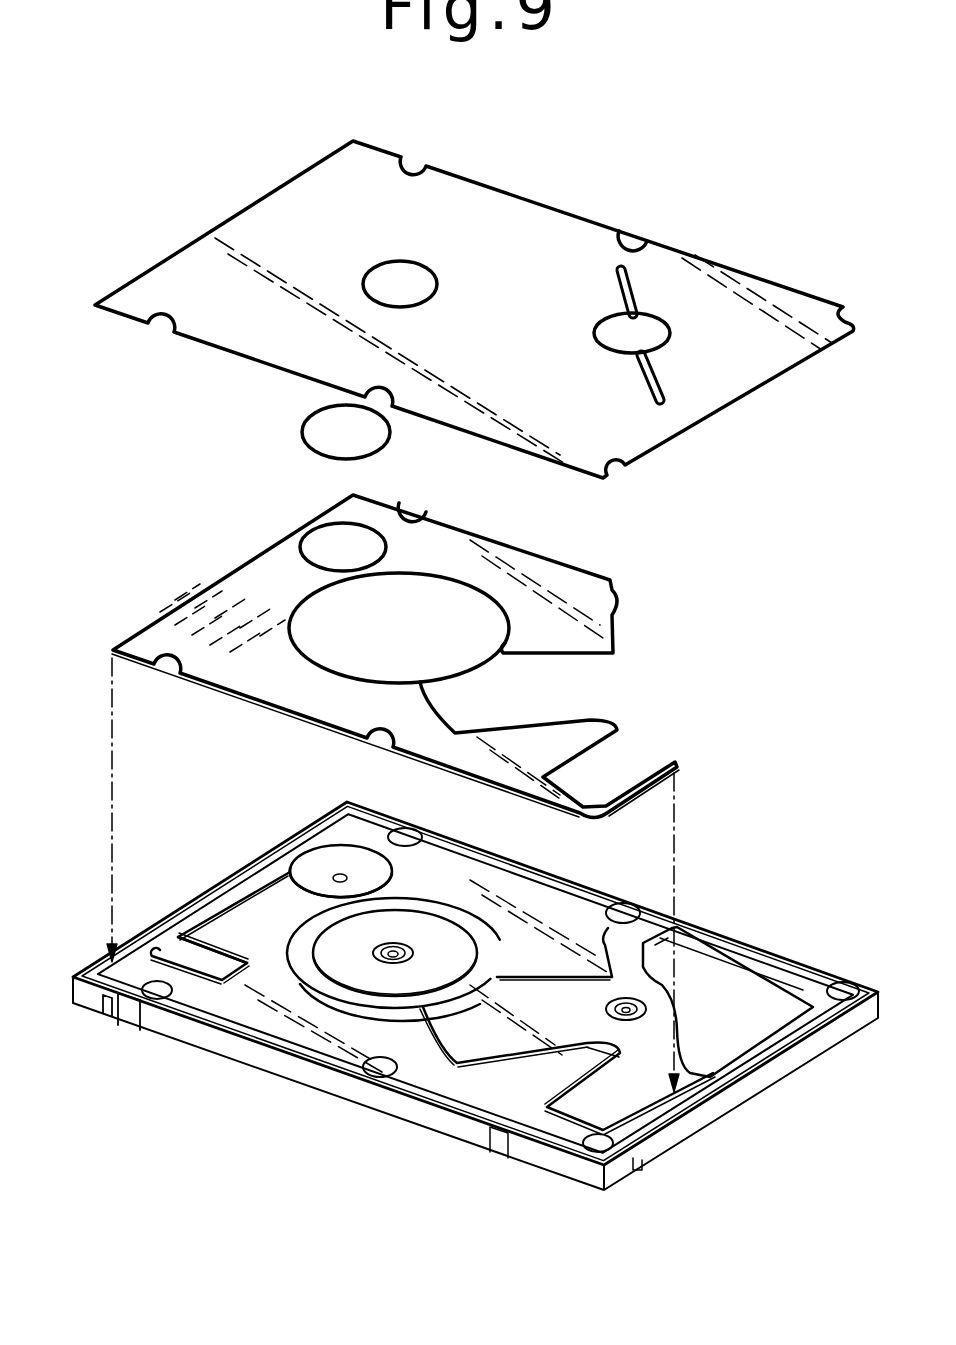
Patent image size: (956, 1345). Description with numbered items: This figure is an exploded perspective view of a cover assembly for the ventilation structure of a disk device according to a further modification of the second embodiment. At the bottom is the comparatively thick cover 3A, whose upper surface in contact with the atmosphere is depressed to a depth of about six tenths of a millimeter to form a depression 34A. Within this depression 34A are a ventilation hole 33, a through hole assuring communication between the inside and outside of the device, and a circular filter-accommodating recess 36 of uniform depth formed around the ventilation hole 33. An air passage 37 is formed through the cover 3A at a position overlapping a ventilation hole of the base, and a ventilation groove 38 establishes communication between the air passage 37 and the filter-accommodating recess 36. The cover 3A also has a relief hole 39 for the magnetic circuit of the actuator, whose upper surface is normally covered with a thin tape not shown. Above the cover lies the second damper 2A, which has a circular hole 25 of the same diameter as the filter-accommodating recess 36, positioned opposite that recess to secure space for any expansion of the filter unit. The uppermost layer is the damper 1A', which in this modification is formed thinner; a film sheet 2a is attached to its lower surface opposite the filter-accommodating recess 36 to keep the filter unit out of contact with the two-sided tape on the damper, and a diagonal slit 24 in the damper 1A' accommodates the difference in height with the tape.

The damper 1A' is at (474, 309).
The diagonal slit 24 is at (658, 378).
The film sheet 2a is at (306, 432).
The second damper 2A is at (550, 580).
The circular hole 25 is at (333, 540).
The cover 3A is at (267, 843).
The ventilation hole 33 is at (339, 873).
The filter-accommodating recess 36 is at (378, 879).
The depression 34A is at (547, 907).
The ventilation groove 38 is at (217, 912).
The relief hole 39 is at (745, 1029).
The air passage 37 is at (103, 990).